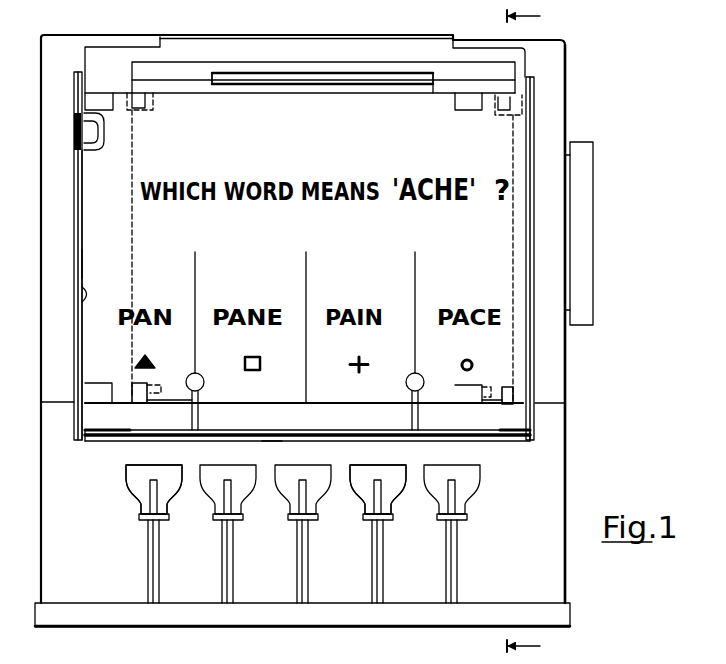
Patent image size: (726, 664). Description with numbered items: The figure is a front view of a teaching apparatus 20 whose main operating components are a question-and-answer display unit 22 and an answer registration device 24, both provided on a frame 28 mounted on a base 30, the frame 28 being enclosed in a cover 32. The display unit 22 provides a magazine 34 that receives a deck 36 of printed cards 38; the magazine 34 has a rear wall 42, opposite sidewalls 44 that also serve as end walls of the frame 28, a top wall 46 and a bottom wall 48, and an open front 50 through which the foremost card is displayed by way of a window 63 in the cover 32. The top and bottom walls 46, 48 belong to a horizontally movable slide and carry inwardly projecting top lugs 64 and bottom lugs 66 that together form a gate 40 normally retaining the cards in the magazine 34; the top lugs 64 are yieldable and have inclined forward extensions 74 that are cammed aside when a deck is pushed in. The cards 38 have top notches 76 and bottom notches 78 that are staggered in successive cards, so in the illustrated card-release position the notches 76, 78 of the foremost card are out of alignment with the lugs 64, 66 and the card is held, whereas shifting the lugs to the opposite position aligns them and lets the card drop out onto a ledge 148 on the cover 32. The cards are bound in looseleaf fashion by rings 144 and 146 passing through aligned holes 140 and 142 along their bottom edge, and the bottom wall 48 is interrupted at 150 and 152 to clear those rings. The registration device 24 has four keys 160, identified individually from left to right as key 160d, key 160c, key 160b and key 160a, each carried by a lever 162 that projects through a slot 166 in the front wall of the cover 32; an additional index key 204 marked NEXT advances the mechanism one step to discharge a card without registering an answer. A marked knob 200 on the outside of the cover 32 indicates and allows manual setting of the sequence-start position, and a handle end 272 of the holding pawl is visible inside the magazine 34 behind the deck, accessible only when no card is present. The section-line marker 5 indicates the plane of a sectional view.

The teaching apparatus 20 is at (581, 61).
The question-and-answer display unit 22 is at (78, 217).
The answer registration device 24 is at (136, 457).
The frame 28 is at (88, 80).
The base 30 is at (321, 620).
The cover 32 is at (553, 129).
The magazine 34 is at (452, 90).
The deck 36 is at (246, 90).
The printed cards 38 is at (342, 107).
The gate 40 is at (509, 403).
The rear wall 42 is at (288, 85).
The sidewalls 44 is at (79, 186).
The top wall 46 is at (183, 88).
The bottom wall 48 is at (496, 407).
The open front 50 is at (92, 263).
The window 63 is at (85, 298).
The top lugs 64 is at (152, 101).
The bottom lugs 66 is at (135, 385).
The inclined forward extensions 74 is at (137, 112).
The top notches 76 is at (105, 98).
The bottom notches 78 is at (158, 387).
The holes 140 is at (198, 374).
The holes 142 is at (407, 382).
The ring 144 is at (199, 420).
The ring 146 is at (411, 424).
The ledge 148 is at (270, 442).
The interruption 150 is at (180, 404).
The interruption 152 is at (483, 405).
The keys 160 is at (217, 499).
The right end key 160a is at (394, 462).
The key 160b is at (306, 467).
The key 160c is at (228, 466).
The left end key 160d is at (133, 467).
The levers 162 is at (150, 506).
The slots 166 is at (218, 560).
The knob 200 is at (595, 286).
The index key 204 is at (450, 455).
The handle end 272 is at (88, 131).
The section line 5 is at (532, 336).